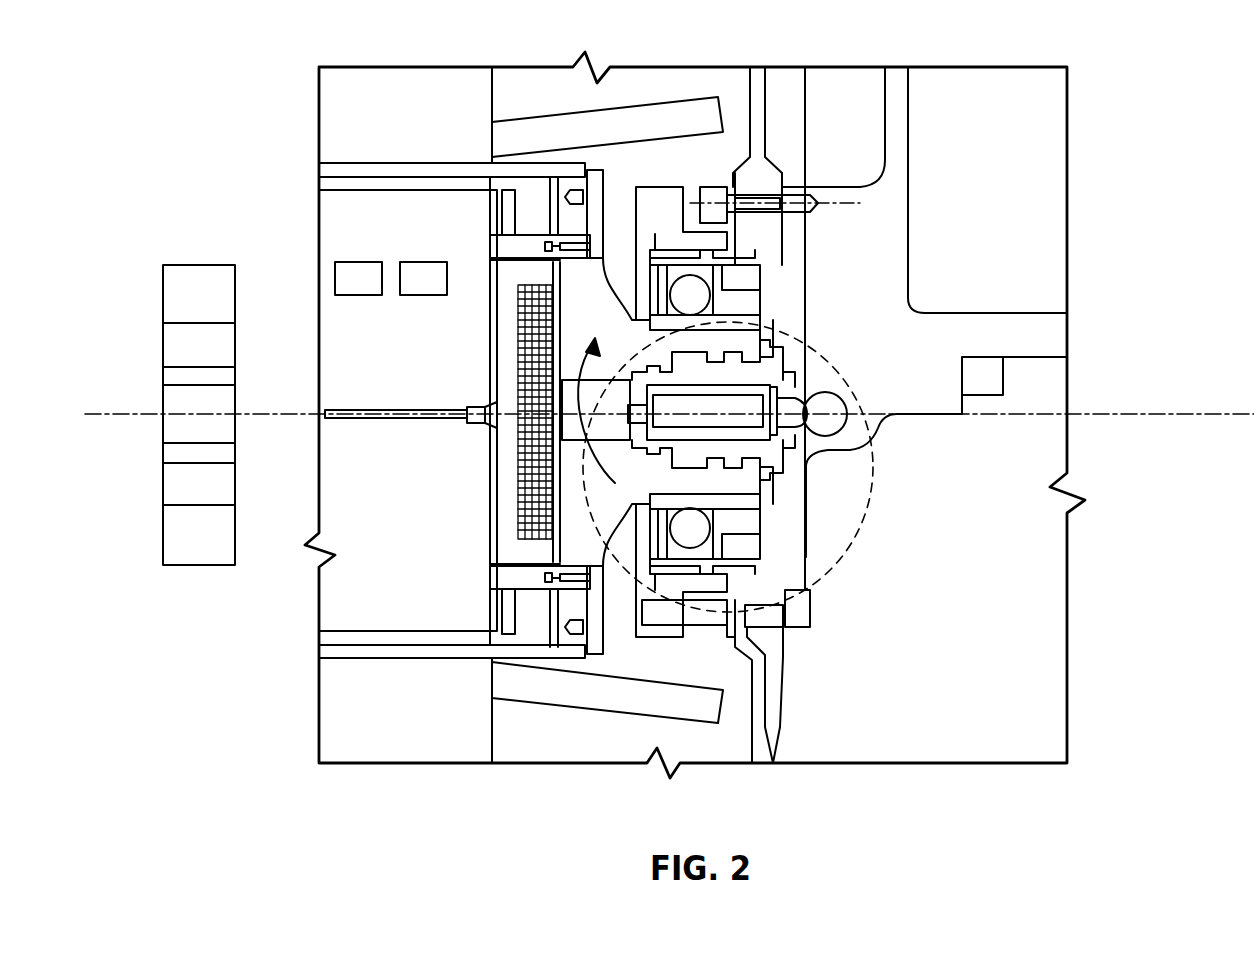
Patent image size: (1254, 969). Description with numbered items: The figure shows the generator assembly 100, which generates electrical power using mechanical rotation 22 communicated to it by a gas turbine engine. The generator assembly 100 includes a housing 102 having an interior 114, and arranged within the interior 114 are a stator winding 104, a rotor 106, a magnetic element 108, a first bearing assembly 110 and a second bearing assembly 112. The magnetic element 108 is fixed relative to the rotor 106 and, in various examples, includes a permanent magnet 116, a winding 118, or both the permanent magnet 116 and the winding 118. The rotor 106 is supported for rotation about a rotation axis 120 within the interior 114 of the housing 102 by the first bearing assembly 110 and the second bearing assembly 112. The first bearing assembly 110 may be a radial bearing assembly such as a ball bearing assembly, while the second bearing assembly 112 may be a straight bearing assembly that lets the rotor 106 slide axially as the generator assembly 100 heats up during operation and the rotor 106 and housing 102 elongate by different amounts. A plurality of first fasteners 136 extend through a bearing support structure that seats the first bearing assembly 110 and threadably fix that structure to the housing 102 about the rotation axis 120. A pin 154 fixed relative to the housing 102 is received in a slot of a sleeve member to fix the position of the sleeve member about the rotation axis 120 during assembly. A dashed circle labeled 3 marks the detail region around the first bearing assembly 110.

The generator assembly 100 is at (397, 812).
The housing 102 is at (895, 337).
The stator winding 104 is at (677, 128).
The rotor 106 is at (398, 225).
The magnetic element 108 is at (457, 185).
The first bearing assembly 110 is at (723, 318).
The second bearing assembly 112 is at (198, 265).
The interior 114 is at (703, 677).
The permanent magnet 116 is at (370, 277).
The winding 118 is at (421, 277).
The rotation axis 120 is at (978, 416).
The first fasteners 136 is at (753, 198).
The pin 154 is at (752, 247).
The mechanical rotation 22 is at (557, 408).
The detail section circle 3 is at (837, 568).